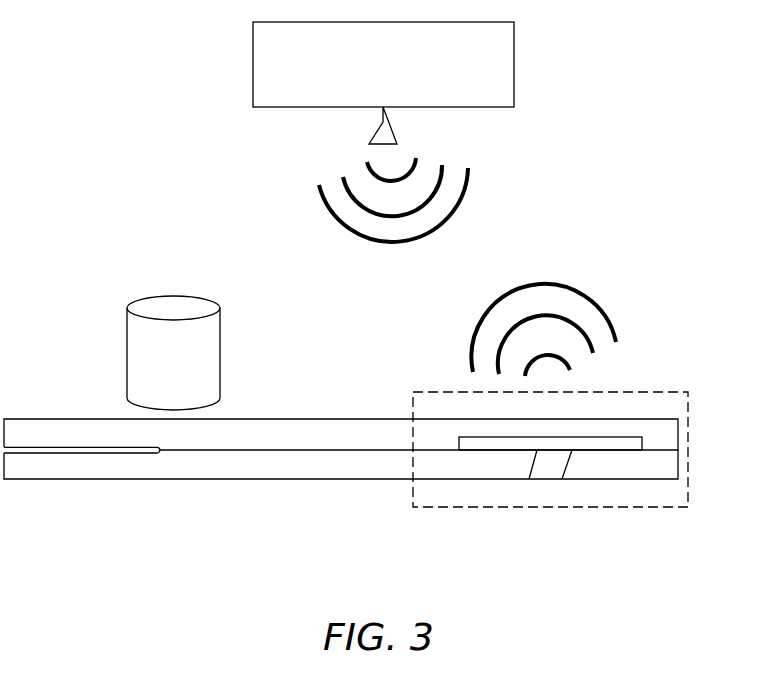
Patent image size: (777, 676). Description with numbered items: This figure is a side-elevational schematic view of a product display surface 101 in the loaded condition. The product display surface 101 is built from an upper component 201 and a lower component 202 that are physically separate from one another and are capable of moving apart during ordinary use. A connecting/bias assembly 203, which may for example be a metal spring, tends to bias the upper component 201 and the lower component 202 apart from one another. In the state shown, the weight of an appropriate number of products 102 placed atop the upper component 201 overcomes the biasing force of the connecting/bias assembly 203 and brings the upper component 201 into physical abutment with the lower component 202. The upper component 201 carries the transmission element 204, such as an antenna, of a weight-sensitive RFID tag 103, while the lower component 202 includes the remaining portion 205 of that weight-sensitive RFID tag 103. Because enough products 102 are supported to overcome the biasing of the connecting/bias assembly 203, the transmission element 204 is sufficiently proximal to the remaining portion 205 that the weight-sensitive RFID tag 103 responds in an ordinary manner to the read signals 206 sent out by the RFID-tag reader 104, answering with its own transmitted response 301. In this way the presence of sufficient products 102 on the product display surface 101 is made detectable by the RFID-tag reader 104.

The product display surface 101 is at (341, 452).
The products 102 is at (222, 352).
The weight-sensitive RFID tag 103 is at (668, 391).
The RFID-tag reader 104 is at (253, 60).
The upper component 201 is at (66, 418).
The lower component 202 is at (77, 480).
The connecting/bias assembly 203 is at (85, 453).
The transmission element 204 is at (472, 437).
The remaining portion 205 is at (548, 468).
The read signals 206 is at (345, 222).
The transmitted response 301 is at (577, 298).